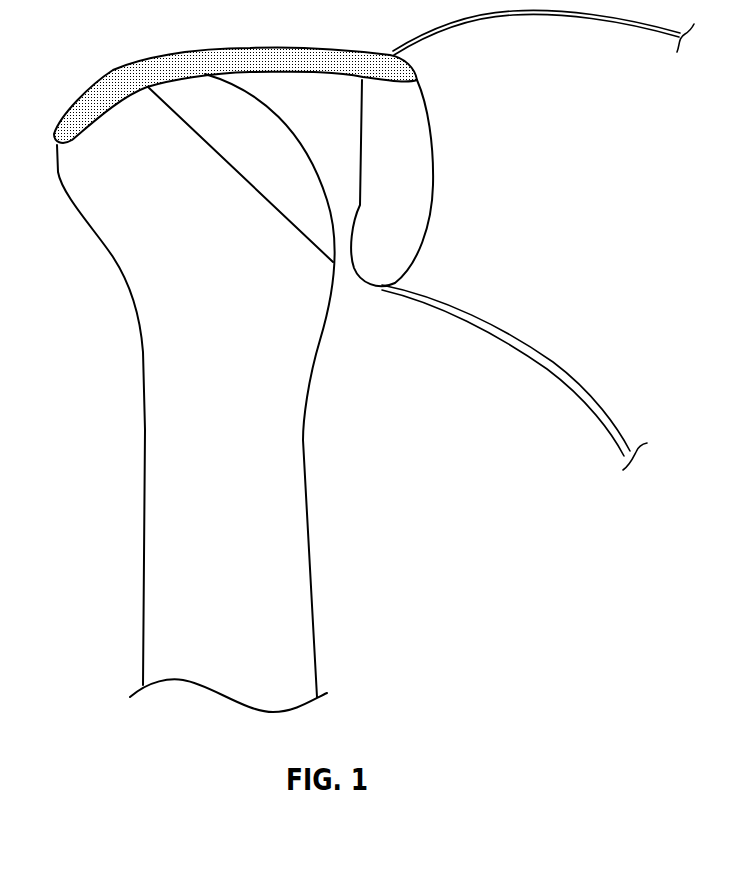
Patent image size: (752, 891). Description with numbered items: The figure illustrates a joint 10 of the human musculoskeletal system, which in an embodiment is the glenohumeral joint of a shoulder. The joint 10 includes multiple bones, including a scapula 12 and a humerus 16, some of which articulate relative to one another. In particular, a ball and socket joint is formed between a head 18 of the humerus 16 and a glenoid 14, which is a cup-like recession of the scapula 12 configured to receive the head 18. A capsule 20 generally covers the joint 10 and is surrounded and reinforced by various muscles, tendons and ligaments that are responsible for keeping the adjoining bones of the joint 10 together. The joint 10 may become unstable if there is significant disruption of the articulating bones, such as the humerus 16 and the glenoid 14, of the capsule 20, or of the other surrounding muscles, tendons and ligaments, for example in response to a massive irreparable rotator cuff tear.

The joint 10 is at (346, 270).
The scapula 12 is at (612, 188).
The glenoid 14 is at (418, 157).
The humerus 16 is at (156, 531).
The head 18 is at (267, 163).
The capsule 20 is at (103, 66).